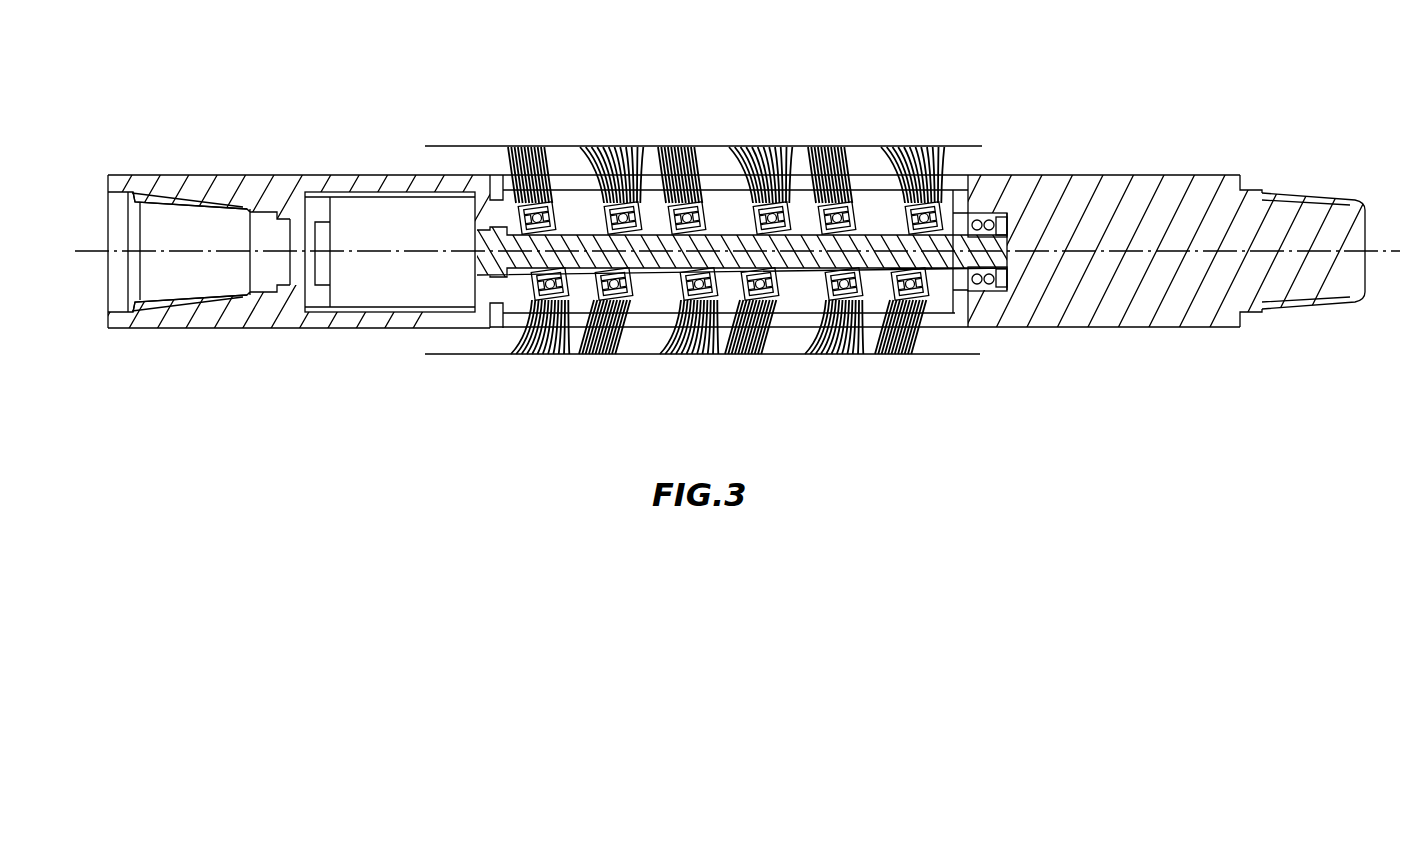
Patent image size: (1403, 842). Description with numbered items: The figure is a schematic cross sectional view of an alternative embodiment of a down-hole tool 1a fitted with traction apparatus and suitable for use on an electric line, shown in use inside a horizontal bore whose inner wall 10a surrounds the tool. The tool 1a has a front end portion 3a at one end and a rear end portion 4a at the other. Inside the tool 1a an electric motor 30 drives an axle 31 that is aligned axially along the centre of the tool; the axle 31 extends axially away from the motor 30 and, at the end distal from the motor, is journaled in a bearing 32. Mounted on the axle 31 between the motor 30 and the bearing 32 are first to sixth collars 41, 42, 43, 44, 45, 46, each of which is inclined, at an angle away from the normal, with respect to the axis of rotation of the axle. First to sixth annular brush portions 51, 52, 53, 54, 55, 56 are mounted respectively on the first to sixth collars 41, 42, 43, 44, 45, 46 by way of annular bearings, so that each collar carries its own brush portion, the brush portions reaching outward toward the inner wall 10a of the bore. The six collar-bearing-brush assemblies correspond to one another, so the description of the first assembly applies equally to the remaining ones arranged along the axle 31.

The down-hole tool 1a is at (1072, 166).
The front end portion 3a is at (1297, 215).
The rear end portion 4a is at (160, 218).
The inner wall 10a is at (437, 158).
The electric motor 30 is at (372, 288).
The axle 31 is at (963, 307).
The bearing 32 is at (988, 298).
The first collar 41 is at (508, 242).
The second collar 42 is at (612, 246).
The third collar 43 is at (662, 250).
The fourth collar 44 is at (757, 250).
The fifth collar 45 is at (861, 250).
The sixth collar 46 is at (937, 252).
The first annular brush portion 51 is at (528, 356).
The second annular brush portion 52 is at (600, 356).
The third annular brush portion 53 is at (682, 356).
The fourth annular brush portion 54 is at (757, 356).
The fifth annular brush portion 55 is at (855, 356).
The sixth annular brush portion 56 is at (917, 356).